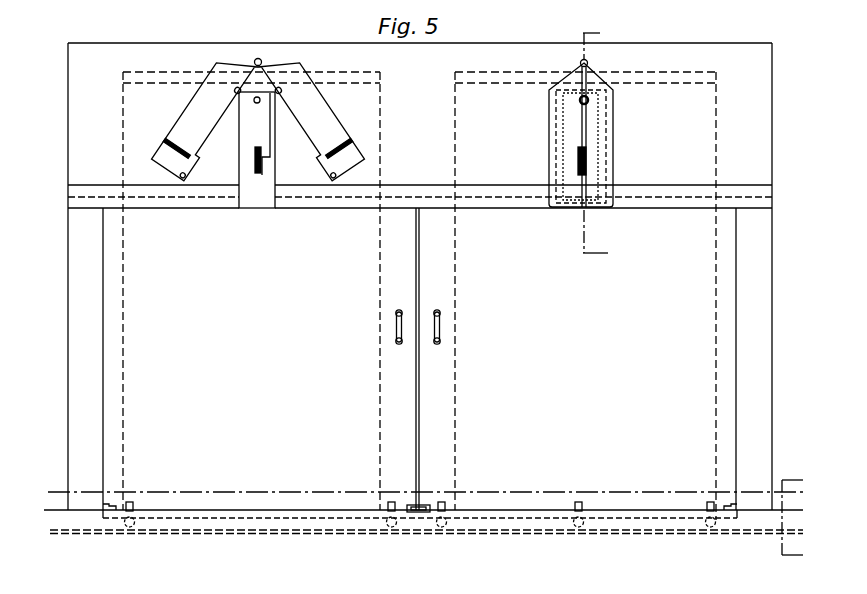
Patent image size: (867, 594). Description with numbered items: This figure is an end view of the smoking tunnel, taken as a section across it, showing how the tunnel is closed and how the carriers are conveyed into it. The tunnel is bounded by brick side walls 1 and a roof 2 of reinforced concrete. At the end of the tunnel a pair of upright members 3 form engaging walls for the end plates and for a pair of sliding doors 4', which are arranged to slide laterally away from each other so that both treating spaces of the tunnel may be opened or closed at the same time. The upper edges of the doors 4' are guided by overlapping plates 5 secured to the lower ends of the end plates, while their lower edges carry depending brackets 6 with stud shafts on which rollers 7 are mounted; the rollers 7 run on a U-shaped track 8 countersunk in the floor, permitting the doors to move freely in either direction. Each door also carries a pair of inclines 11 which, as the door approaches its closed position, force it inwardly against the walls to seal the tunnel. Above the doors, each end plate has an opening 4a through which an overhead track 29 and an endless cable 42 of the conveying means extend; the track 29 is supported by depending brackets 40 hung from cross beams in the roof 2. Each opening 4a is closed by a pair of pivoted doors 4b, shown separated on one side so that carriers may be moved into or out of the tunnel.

The side walls 1 is at (68, 296).
The roof 2 is at (665, 44).
The upright members 3 is at (452, 290).
The doors 4' is at (416, 296).
The openings 4a is at (630, 173).
The doors 4b is at (627, 140).
The overlapping plates 5 is at (199, 208).
The depending brackets 6 is at (53, 476).
The rollers 7 is at (135, 546).
The track 8 is at (190, 535).
The inclines 11 is at (105, 505).
The track 29 is at (577, 165).
The depending brackets 40 is at (275, 133).
The endless cables 42 is at (257, 103).